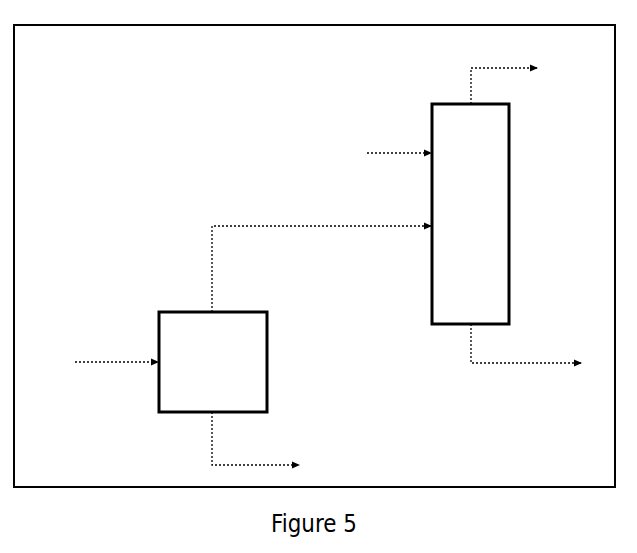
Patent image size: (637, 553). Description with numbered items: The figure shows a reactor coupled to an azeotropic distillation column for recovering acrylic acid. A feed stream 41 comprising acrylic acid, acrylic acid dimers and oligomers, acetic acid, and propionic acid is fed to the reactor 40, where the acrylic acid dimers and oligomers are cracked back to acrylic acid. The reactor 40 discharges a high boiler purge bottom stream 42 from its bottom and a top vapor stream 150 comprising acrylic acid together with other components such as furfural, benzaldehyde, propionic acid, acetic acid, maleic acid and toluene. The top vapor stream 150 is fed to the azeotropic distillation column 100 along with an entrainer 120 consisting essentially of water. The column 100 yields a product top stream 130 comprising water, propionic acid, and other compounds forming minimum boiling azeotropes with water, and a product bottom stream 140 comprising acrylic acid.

The reactor 40 is at (213, 362).
The feed stream 41 is at (113, 354).
The high boiler purge bottom stream 42 is at (255, 457).
The azeotropic distillation column 100 is at (470, 214).
The entrainer 120 is at (389, 147).
The product top stream 130 is at (500, 62).
The product bottom stream 140 is at (534, 357).
The top vapor stream 150 is at (381, 217).